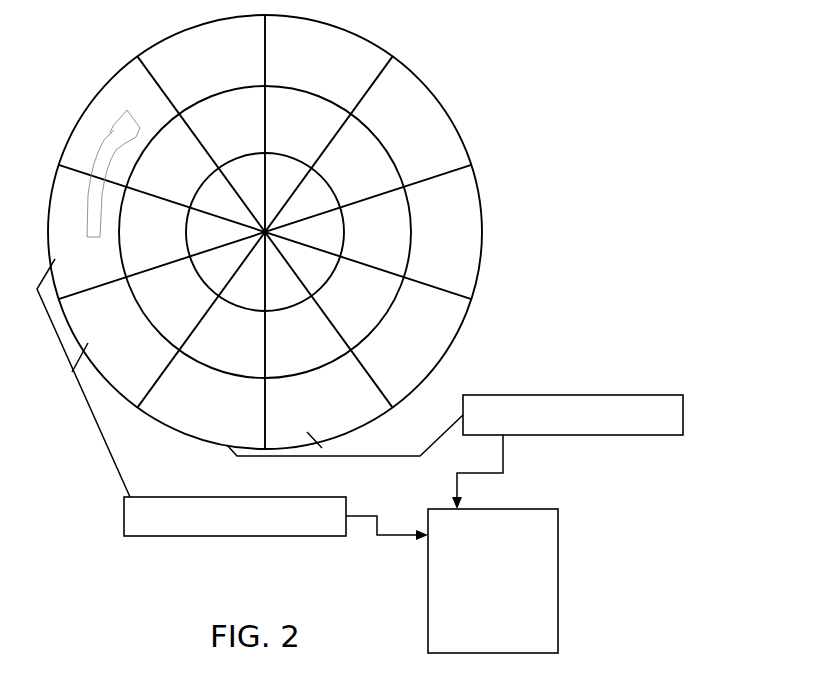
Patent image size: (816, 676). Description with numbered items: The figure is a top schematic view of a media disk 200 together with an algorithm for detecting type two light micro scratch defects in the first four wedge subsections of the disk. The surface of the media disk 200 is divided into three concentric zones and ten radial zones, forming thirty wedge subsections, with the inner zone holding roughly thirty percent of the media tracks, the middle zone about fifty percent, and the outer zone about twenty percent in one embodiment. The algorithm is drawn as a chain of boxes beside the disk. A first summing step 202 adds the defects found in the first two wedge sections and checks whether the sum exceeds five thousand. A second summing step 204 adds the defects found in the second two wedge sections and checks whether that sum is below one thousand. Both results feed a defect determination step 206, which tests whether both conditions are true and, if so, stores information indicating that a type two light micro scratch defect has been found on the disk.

The media disk 200 is at (556, 66).
The first summing step 202 is at (650, 395).
The second summing step 204 is at (307, 536).
The defect determination step 206 is at (532, 509).